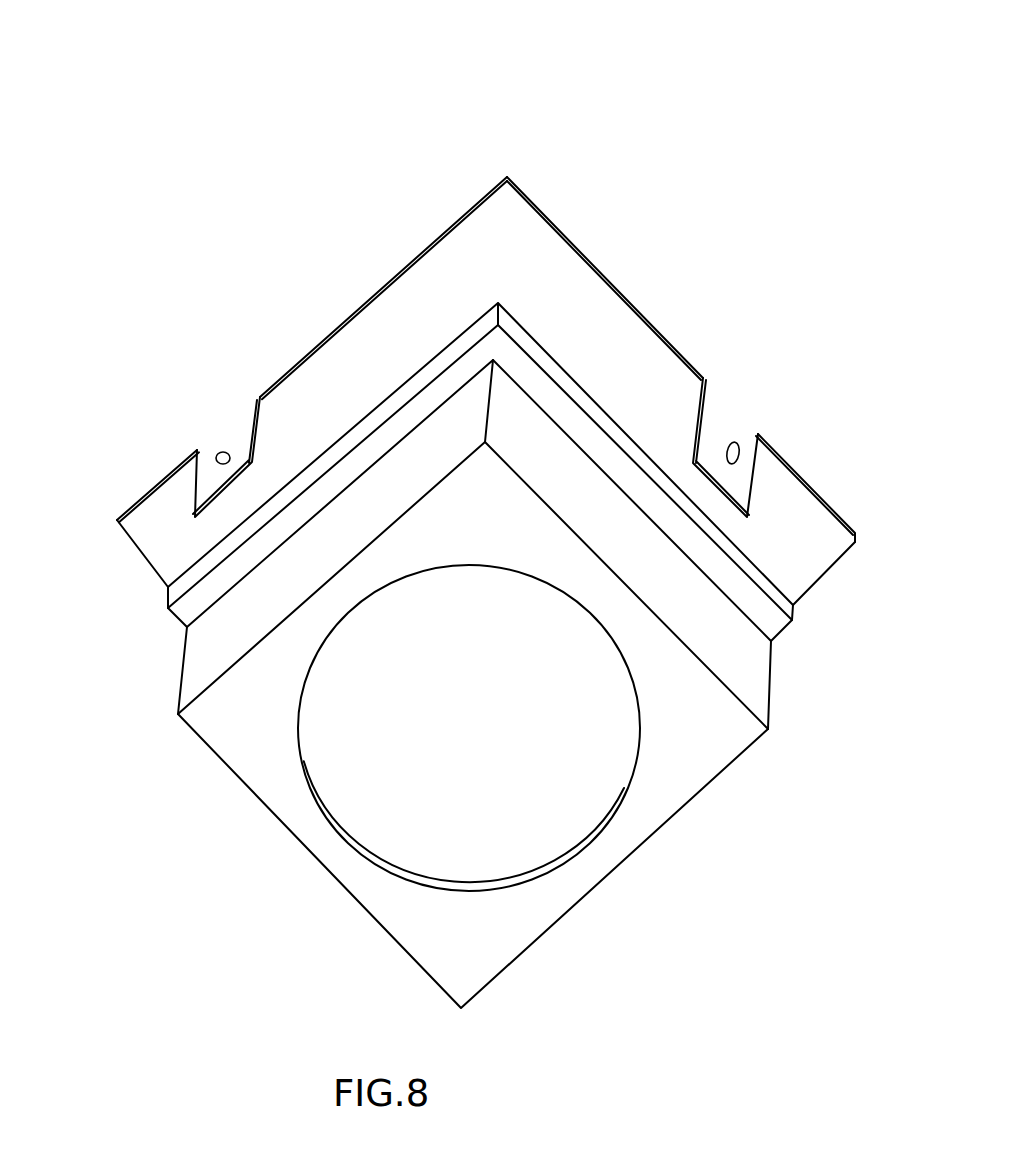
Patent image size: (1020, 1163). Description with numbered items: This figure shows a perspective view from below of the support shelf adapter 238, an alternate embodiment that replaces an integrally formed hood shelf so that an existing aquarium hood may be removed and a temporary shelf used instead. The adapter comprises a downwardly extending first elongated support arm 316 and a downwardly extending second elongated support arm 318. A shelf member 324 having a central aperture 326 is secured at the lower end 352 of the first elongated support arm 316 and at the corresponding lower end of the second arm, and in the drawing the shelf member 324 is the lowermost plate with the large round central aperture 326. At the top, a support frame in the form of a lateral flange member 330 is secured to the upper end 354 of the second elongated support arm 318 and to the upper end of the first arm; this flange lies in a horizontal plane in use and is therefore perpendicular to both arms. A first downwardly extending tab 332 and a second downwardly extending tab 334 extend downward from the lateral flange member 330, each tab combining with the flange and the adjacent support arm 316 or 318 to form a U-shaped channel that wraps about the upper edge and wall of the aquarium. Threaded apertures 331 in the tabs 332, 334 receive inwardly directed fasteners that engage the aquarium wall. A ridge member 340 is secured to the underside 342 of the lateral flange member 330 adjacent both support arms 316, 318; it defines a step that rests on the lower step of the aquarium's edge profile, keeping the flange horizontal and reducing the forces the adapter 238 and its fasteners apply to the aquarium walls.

The support shelf adapter 238 is at (593, 171).
The lateral flange member 330 is at (365, 342).
The second downwardly extending tab 334 is at (238, 428).
The first downwardly extending tab 332 is at (718, 417).
The threaded aperture 331 is at (217, 453).
The underside of the lateral flange member 342 is at (803, 568).
The ridge member 340 is at (790, 622).
The second elongated support arm 318 is at (240, 633).
The first elongated support arm 316 is at (707, 638).
The upper end of the second elongated support arm 354 is at (208, 692).
The lower end of the first elongated support arm 352 is at (681, 648).
The shelf member 324 is at (482, 953).
The central aperture 326 is at (378, 857).